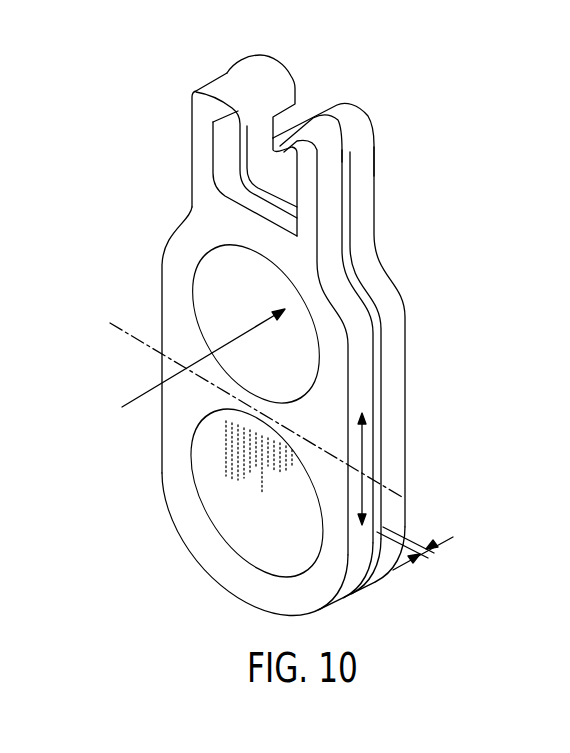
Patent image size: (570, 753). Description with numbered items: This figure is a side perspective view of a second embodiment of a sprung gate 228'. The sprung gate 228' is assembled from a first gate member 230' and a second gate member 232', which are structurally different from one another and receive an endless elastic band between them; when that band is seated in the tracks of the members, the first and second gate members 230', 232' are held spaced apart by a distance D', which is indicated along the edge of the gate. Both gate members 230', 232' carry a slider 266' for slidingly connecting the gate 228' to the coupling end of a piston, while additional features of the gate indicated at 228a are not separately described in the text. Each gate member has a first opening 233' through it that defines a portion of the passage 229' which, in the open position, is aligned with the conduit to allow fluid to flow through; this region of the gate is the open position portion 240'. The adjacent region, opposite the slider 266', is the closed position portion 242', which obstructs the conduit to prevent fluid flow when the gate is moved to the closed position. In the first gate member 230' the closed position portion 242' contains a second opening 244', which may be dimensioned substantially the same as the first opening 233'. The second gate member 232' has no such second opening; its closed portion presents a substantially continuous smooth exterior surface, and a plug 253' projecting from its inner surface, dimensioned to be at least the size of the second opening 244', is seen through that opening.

The sprung gate 228' is at (312, 334).
The prongs 228a is at (192, 150).
The slider 266' is at (246, 79).
The passage 229' is at (240, 403).
The first gate member 230' is at (224, 427).
The second gate member 232' is at (374, 356).
The first opening 233' is at (227, 316).
The open position portion 240' is at (374, 363).
The closed position portion 242' is at (410, 379).
The second opening 244' is at (237, 487).
The plug 253' is at (264, 465).
The distance D' is at (415, 565).